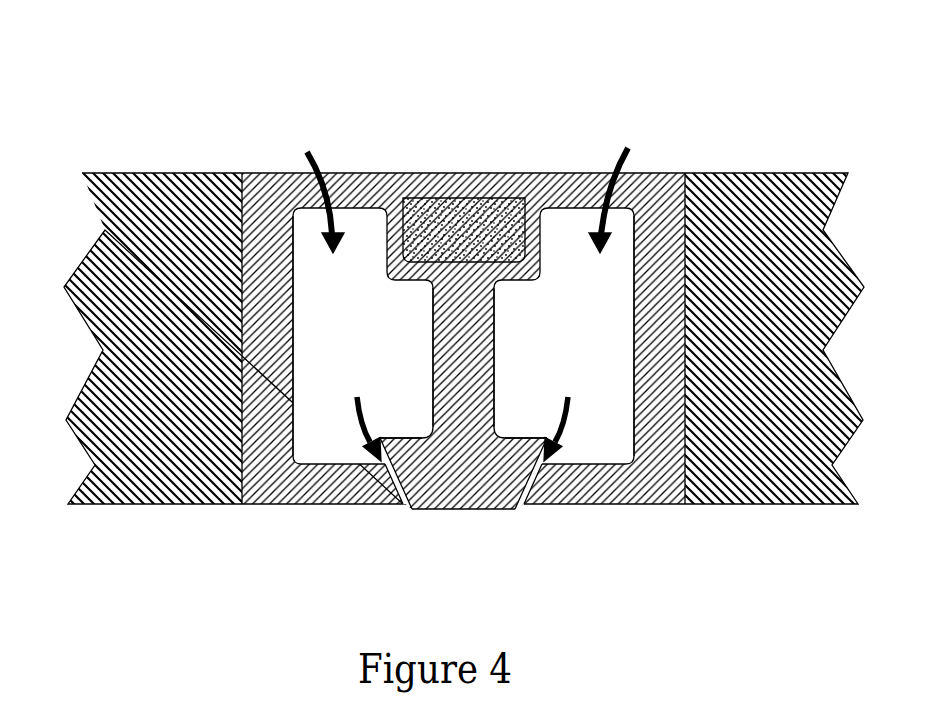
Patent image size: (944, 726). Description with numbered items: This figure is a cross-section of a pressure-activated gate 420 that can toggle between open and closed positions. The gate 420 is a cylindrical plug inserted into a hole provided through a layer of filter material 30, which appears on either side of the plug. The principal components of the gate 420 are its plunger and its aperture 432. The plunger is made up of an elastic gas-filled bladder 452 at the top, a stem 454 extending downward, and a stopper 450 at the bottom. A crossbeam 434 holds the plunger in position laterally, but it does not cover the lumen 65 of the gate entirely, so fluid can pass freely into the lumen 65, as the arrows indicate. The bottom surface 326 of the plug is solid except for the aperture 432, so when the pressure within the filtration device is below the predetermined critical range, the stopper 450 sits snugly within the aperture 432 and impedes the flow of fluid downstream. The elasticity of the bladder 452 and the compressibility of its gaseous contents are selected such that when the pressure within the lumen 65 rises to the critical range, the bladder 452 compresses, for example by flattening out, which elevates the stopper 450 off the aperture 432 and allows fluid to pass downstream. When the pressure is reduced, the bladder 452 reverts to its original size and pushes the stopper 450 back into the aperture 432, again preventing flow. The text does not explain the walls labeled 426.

The layer of filter material 30 is at (185, 352).
The lumen 65 is at (403, 375).
The bottom surface 326 is at (318, 547).
The pressure-activated gate 420 is at (490, 120).
The cavity side wall 426 is at (280, 355).
The aperture 432 is at (408, 508).
The crossbeam 434 is at (372, 182).
The stopper 450 is at (463, 473).
The elastic gas-filled bladder 452 is at (490, 243).
The stem 454 is at (490, 372).